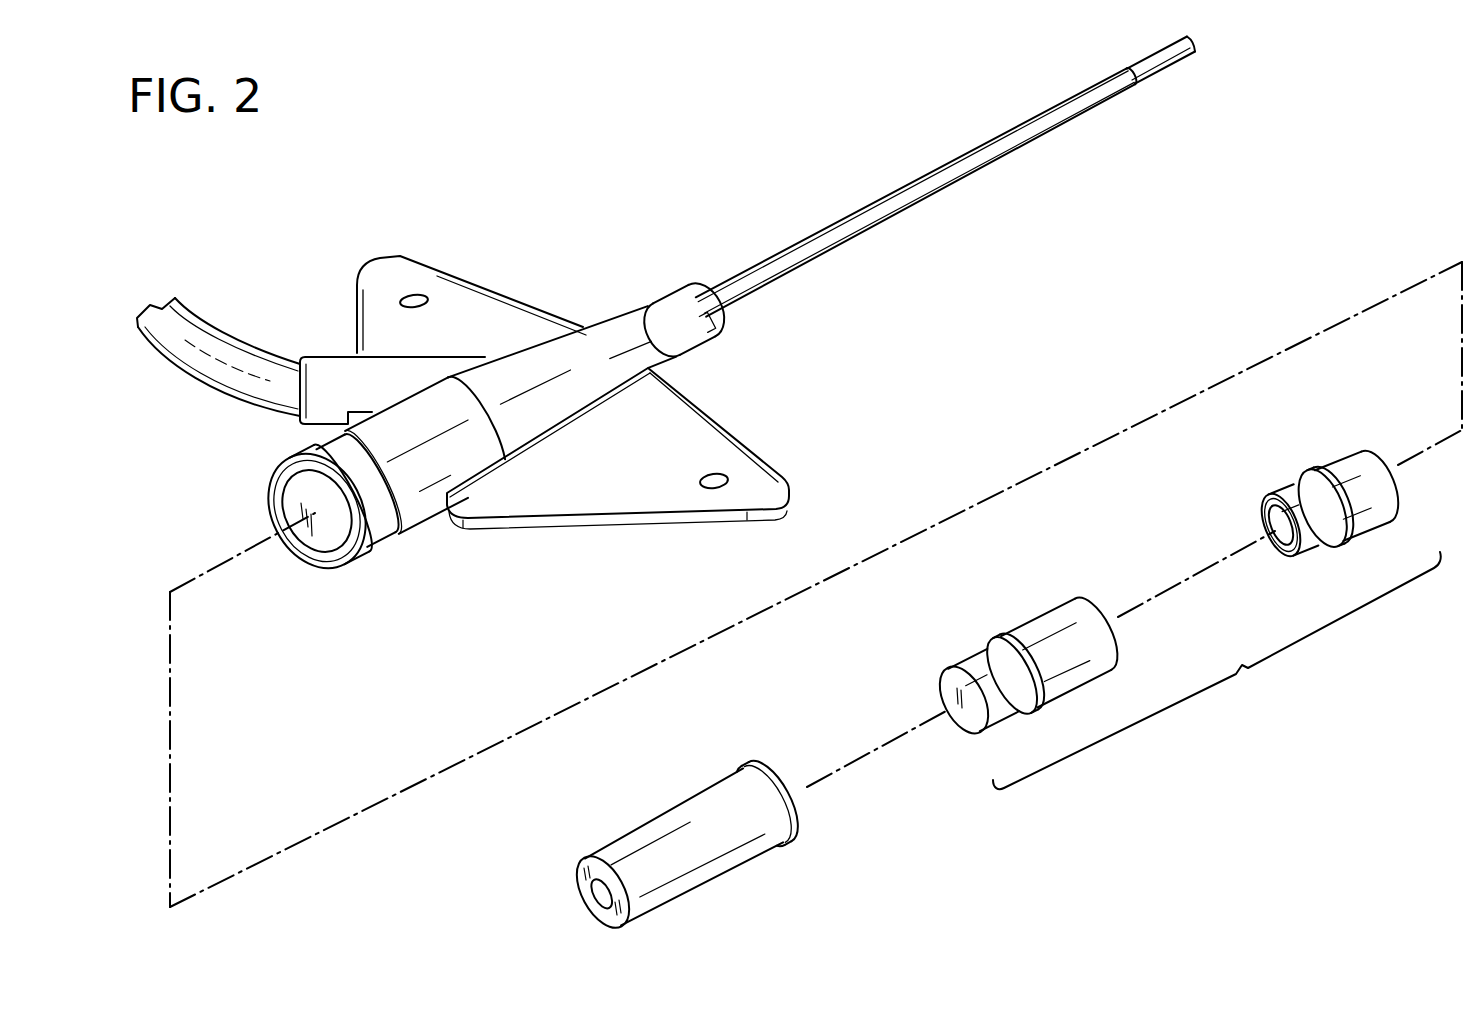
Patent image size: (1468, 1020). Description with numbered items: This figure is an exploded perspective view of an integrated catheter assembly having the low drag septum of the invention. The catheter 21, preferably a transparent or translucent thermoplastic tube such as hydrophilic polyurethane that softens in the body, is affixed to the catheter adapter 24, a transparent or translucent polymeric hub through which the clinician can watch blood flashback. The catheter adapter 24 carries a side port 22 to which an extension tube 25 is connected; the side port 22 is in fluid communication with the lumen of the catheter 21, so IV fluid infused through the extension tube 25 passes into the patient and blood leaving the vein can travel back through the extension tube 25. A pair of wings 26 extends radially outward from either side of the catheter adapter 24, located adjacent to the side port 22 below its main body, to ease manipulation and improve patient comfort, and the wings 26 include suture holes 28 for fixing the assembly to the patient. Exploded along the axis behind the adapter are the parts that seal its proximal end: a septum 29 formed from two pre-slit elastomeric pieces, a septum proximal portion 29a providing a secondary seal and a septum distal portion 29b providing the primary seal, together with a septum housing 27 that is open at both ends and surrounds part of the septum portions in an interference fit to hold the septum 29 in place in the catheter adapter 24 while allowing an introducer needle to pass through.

The catheter 21 is at (893, 190).
The side port 22 is at (342, 373).
The catheter adapter 24 is at (413, 500).
The extension tube 25 is at (210, 347).
The wings 26 is at (483, 307).
The septum housing 27 is at (660, 833).
The suture holes 28 is at (413, 297).
The septum 29 is at (1217, 670).
The septum proximal portion 29a is at (1033, 623).
The septum distal portion 29b is at (1340, 465).